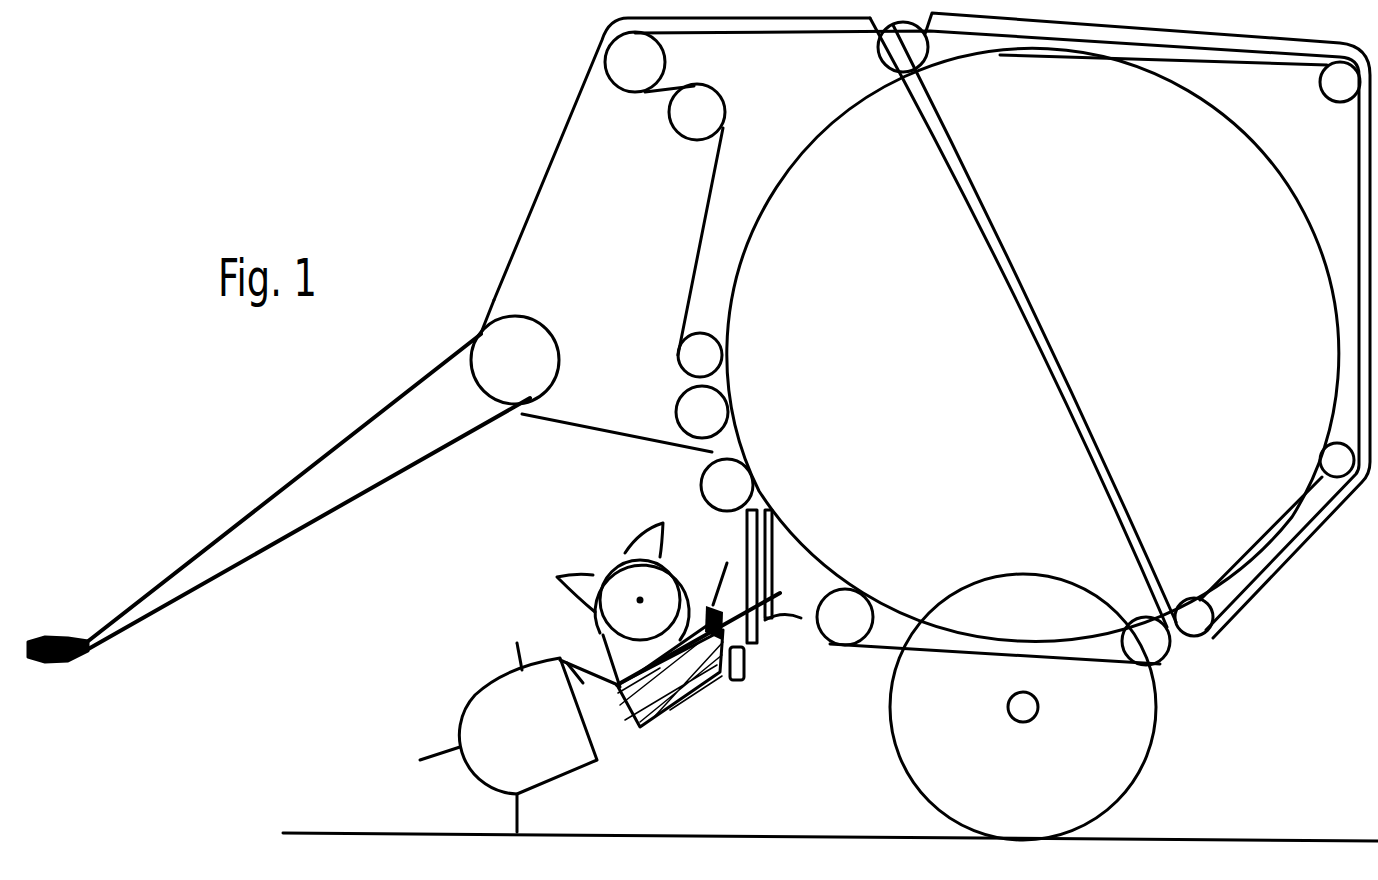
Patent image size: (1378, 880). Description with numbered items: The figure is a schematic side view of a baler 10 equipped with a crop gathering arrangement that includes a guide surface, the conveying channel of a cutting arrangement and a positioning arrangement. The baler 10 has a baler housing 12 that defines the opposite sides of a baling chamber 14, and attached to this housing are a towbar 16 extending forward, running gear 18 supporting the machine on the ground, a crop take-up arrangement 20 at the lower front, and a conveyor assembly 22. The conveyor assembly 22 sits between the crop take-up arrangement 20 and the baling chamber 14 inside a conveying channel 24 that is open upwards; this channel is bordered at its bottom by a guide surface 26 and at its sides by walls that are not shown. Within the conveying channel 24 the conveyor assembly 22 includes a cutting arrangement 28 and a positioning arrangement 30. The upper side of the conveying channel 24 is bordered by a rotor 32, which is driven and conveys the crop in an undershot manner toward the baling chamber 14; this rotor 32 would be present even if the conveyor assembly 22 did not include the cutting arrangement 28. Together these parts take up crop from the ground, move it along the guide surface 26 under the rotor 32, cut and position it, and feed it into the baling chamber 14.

The baler 10 is at (366, 162).
The baler housing 12 is at (566, 118).
The baling chamber 14 is at (938, 397).
The towbar 16 is at (247, 507).
The running gear 18 is at (872, 772).
The crop take-up arrangement 20 is at (408, 706).
The conveyor assembly 22 is at (726, 765).
The conveying channel 24 is at (540, 628).
The guide surface 26 is at (787, 622).
The cutting arrangement 28 is at (716, 608).
The positioning arrangement 30 is at (773, 562).
The rotor 32 is at (612, 560).